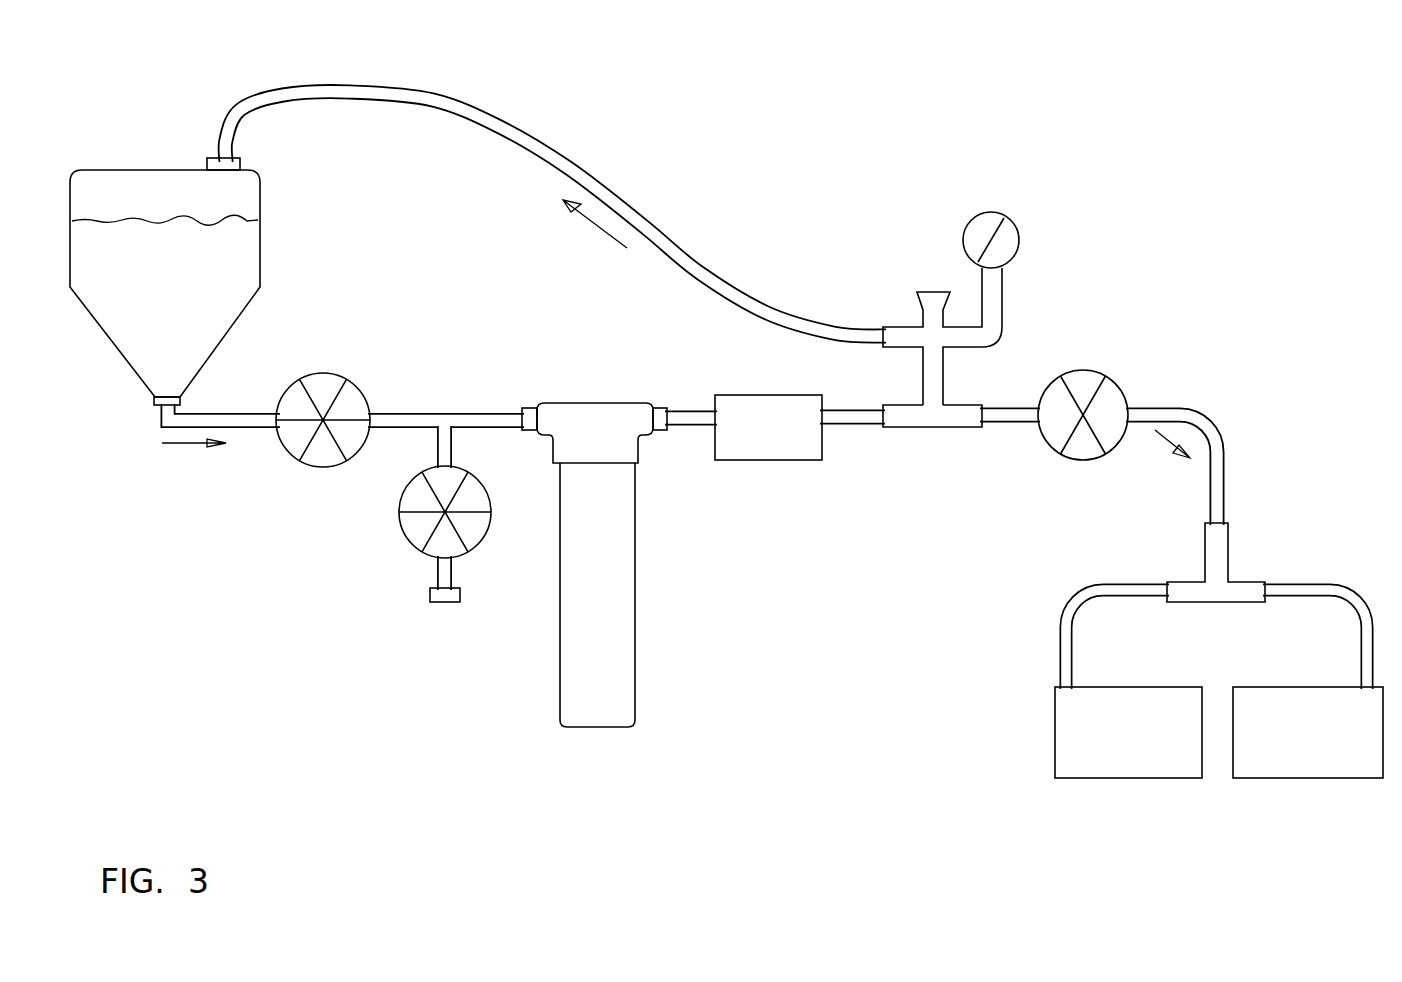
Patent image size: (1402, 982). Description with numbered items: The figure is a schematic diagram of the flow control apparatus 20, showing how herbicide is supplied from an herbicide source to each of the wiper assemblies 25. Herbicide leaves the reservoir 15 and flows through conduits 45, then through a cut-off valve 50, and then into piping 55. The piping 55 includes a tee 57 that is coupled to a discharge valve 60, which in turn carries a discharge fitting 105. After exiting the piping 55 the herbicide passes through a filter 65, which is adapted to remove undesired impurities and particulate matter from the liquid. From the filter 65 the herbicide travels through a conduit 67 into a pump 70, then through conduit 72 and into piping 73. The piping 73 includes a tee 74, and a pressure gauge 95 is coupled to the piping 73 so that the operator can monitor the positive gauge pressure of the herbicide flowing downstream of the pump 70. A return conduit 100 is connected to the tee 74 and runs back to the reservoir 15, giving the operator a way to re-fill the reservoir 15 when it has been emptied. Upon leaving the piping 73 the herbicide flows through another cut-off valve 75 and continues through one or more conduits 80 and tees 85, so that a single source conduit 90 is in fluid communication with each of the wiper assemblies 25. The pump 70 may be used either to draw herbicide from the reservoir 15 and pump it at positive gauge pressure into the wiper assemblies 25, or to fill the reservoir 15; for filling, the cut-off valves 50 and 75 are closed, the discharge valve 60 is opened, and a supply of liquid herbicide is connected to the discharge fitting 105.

The reservoir 15 is at (165, 281).
The flow control apparatus 20 is at (1245, 140).
The wiper assemblies 25 is at (1219, 732).
The conduits 45 is at (240, 411).
The cut-off valve 50 is at (287, 445).
The piping 55 is at (415, 412).
The tee 57 is at (452, 445).
The discharge valve 60 is at (400, 533).
The filter 65 is at (615, 655).
The conduit 67 is at (690, 408).
The pump 70 is at (768, 427).
The conduit 72 is at (862, 420).
The piping 73 is at (918, 425).
The tee 74 is at (927, 372).
The cut-off valve 75 is at (1093, 372).
The conduits 80 is at (1213, 435).
The tees 85 is at (1193, 582).
The source conduit 90 is at (1072, 610).
The pressure gauge 95 is at (980, 220).
The return conduit 100 is at (647, 222).
The discharge fitting 105 is at (462, 604).